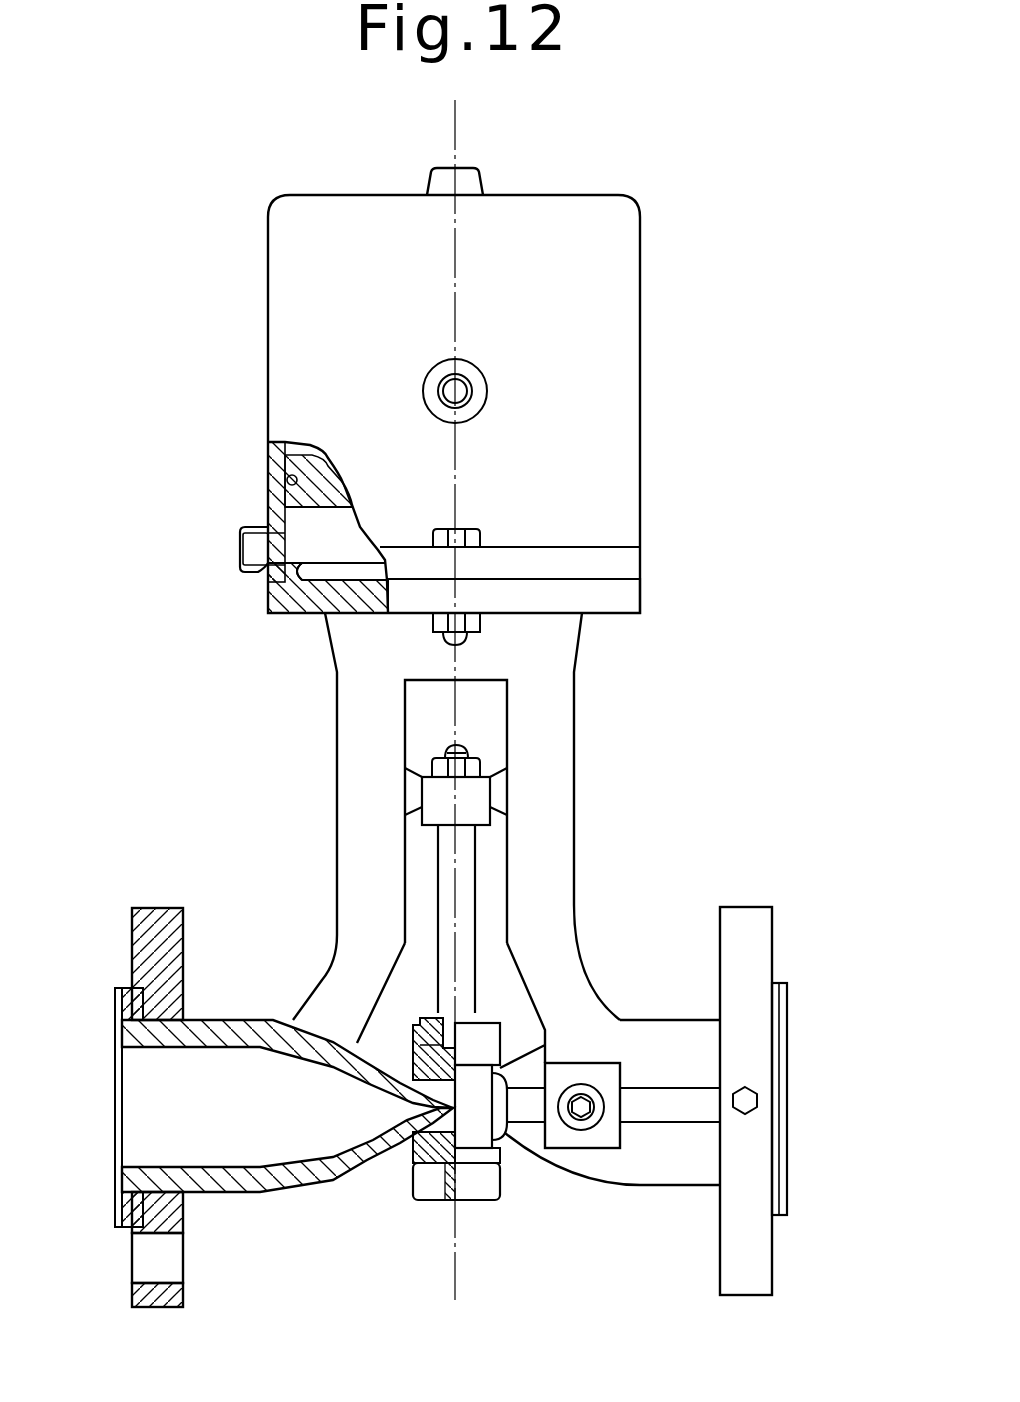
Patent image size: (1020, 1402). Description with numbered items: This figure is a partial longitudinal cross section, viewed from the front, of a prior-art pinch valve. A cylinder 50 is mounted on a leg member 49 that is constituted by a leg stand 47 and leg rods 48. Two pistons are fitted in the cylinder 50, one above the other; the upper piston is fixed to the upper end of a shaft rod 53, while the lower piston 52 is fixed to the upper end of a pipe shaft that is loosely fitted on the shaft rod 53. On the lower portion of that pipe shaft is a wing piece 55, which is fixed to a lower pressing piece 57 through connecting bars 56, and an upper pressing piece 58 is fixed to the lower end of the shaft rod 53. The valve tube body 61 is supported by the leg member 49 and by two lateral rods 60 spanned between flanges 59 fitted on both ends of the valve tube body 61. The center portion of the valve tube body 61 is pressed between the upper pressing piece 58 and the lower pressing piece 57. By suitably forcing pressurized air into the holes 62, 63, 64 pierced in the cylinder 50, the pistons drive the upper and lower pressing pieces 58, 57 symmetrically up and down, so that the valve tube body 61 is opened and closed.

The leg stand 47 is at (625, 597).
The leg rods 48 is at (373, 667).
The leg member 49 is at (528, 665).
The cylinder 50 is at (587, 342).
The lower piston 52 is at (302, 497).
The shaft rod 53 is at (447, 857).
The wing piece 55 is at (472, 798).
The connecting bars 56 is at (463, 883).
The lower pressing piece 57 is at (480, 1183).
The upper pressing piece 58 is at (477, 1037).
The flanges 59 is at (152, 936).
The lateral rods 60 is at (678, 1092).
The valve tube body 61 is at (287, 1172).
The hole 62 is at (468, 179).
The hole 63 is at (462, 393).
The hole 64 is at (250, 548).